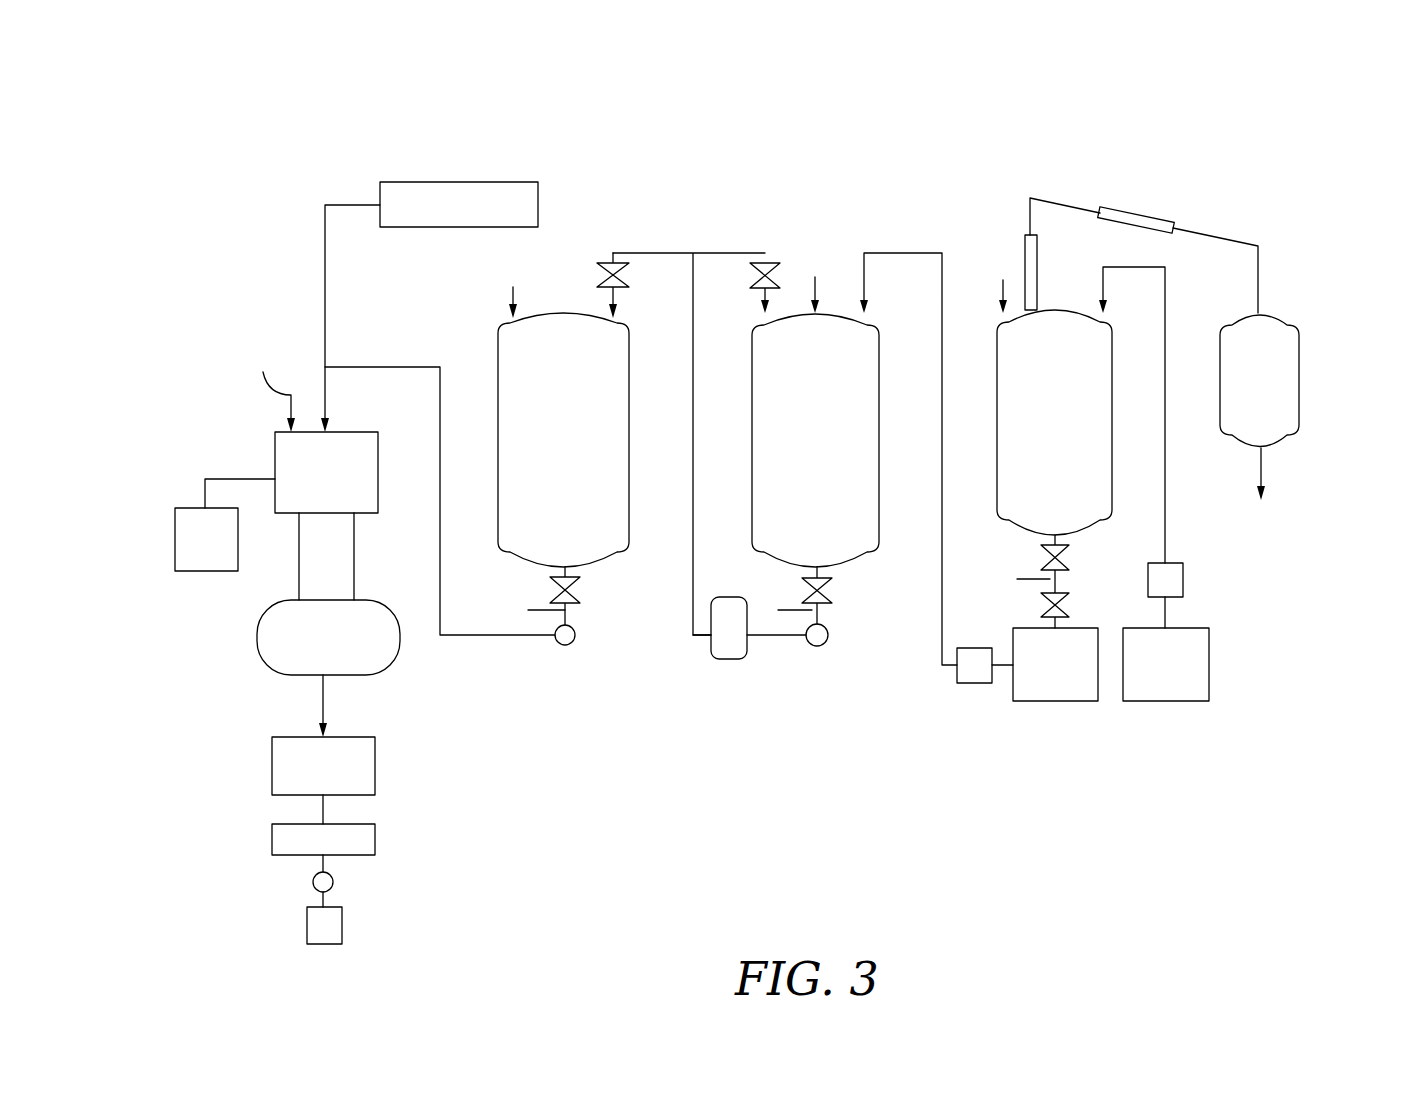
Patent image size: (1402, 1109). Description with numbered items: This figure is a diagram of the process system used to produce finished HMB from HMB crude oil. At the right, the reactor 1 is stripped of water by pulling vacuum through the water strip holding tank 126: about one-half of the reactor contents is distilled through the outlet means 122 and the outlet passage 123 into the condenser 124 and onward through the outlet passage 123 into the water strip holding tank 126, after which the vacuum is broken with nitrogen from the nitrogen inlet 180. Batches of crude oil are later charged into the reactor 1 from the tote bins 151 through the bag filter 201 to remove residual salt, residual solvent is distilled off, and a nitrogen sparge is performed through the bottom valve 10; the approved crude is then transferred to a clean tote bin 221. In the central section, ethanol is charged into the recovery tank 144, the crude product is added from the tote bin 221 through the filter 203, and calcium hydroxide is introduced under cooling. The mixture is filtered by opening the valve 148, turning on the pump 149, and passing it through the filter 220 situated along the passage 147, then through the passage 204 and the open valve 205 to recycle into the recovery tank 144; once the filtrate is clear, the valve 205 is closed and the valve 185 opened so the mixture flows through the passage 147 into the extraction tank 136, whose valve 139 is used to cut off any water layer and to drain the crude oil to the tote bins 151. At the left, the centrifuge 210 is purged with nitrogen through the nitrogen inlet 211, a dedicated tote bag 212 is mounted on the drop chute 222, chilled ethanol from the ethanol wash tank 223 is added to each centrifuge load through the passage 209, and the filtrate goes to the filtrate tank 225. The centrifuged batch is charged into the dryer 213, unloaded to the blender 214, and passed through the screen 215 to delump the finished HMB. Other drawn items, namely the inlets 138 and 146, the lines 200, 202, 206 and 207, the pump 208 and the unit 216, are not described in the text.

The reactor 1 is at (997, 430).
The bottom valve 10 is at (1065, 550).
The outlet means 122 is at (1038, 285).
The outlet passage 123 is at (1044, 197).
The condenser 124 is at (1138, 213).
The water strip holding tank 126 is at (1299, 380).
The extraction tank 136 is at (498, 367).
The inlet 138 is at (513, 297).
The valve 139 is at (578, 592).
The recovery tank 144 is at (752, 430).
The inlet 146 is at (815, 285).
The passage 147 is at (690, 613).
The valve 148 is at (830, 592).
The pump 149 is at (812, 648).
The product tote bins 151 is at (1210, 663).
The nitrogen inlet 180 is at (1003, 290).
The valve 185 is at (622, 272).
The line 200 is at (1165, 518).
The bag filter 201 is at (1183, 580).
The line 202 is at (942, 650).
The filter 203 is at (973, 683).
The passage 204 is at (720, 253).
The valve 205 is at (755, 278).
The line 206 is at (463, 637).
The line 207 is at (542, 608).
The pump 208 is at (563, 648).
The passage 209 is at (325, 265).
The centrifuge 210 is at (275, 447).
The nitrogen inlet 211 is at (266, 384).
The tote bag 212 is at (257, 632).
The dryer 213 is at (272, 764).
The blender 214 is at (272, 838).
The screen 215 is at (333, 880).
The unit 216 is at (307, 925).
The filter 220 is at (727, 660).
The tote bin 221 is at (1053, 701).
The drop chute 222 is at (300, 558).
The ethanol wash tank 223 is at (458, 182).
The filtrate tank 225 is at (175, 537).